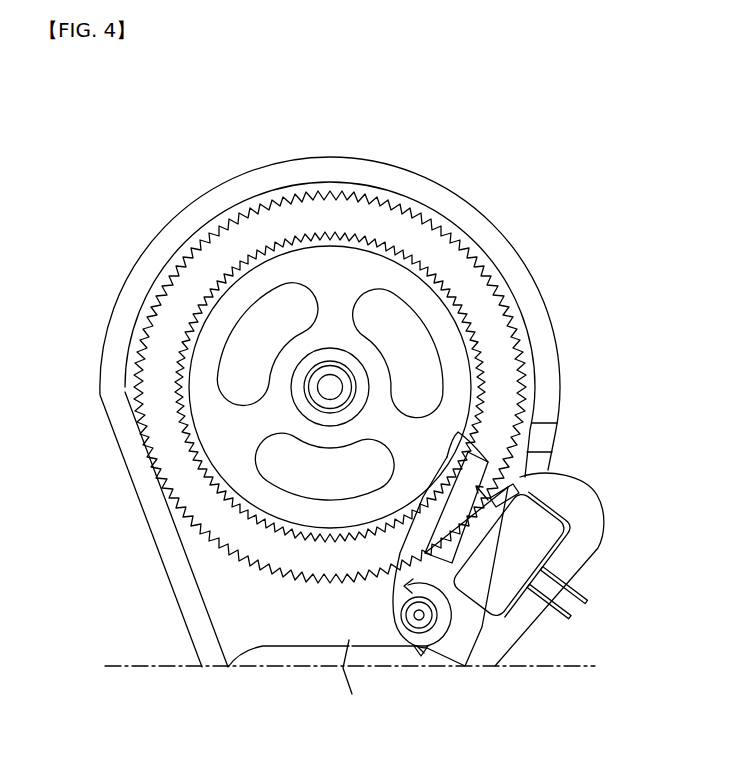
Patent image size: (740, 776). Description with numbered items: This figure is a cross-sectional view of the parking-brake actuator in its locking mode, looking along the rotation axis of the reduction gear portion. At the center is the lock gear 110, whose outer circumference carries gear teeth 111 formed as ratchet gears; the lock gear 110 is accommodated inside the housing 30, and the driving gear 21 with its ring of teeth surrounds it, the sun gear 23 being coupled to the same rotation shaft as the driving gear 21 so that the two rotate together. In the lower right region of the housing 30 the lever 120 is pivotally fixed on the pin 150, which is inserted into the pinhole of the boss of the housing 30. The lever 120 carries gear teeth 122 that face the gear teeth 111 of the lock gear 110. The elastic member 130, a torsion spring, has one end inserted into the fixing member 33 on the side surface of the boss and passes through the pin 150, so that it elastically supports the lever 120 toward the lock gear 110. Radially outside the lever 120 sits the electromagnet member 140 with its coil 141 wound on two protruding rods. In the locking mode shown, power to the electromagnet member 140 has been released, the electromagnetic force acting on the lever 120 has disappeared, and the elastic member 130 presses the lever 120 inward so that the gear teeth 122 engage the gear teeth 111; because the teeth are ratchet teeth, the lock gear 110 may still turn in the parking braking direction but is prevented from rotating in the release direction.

The lock gear 110 is at (333, 263).
The gear teeth 111 is at (480, 382).
The sun gear 23 is at (350, 375).
The driving gear 21 is at (502, 337).
The gear teeth 122 is at (455, 433).
The coil 141 is at (520, 477).
The electromagnet member 140 is at (557, 519).
The housing 30 is at (180, 594).
The lever 120 is at (397, 602).
The elastic member 130 is at (421, 654).
The fixing member 33 is at (422, 652).
The pin 150 is at (430, 617).